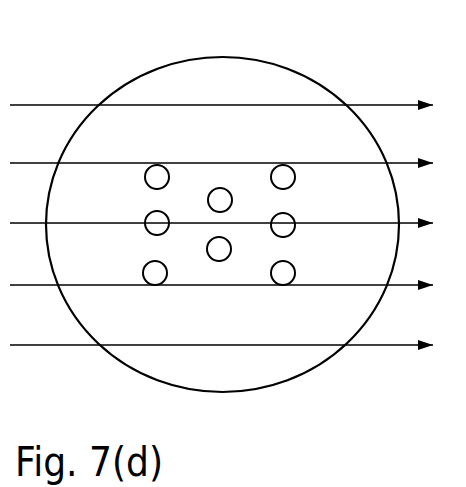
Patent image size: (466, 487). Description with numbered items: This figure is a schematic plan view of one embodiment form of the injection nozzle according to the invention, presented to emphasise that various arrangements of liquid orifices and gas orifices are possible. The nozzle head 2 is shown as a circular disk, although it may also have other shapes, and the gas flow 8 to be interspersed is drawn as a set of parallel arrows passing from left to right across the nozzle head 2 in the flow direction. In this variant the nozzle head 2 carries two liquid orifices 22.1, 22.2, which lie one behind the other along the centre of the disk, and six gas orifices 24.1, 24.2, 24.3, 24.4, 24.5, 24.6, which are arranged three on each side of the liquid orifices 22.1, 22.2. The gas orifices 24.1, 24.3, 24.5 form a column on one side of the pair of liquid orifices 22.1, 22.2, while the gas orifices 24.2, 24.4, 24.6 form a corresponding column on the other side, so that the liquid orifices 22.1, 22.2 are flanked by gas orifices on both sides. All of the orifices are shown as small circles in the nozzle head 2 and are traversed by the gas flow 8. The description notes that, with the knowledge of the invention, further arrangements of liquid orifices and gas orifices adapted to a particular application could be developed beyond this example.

The nozzle head 2 is at (104, 79).
The gas flow 8 is at (403, 99).
The liquid orifice 22.1 is at (220, 198).
The liquid orifice 22.2 is at (220, 250).
The gas orifice 24.1 is at (154, 173).
The gas orifice 24.2 is at (284, 175).
The gas orifice 24.3 is at (157, 222).
The gas orifice 24.4 is at (283, 224).
The gas orifice 24.5 is at (155, 274).
The gas orifice 24.6 is at (285, 275).